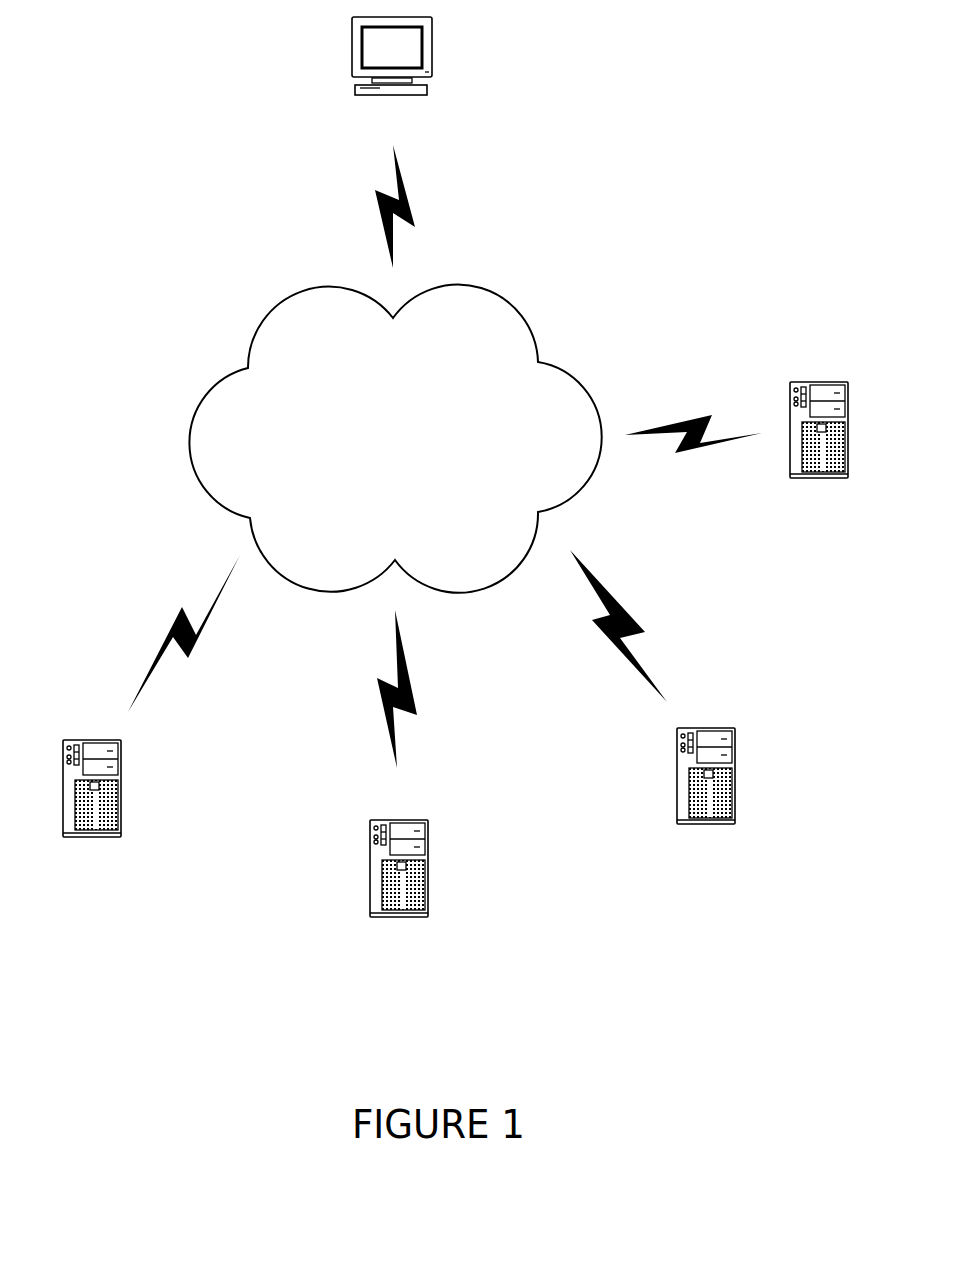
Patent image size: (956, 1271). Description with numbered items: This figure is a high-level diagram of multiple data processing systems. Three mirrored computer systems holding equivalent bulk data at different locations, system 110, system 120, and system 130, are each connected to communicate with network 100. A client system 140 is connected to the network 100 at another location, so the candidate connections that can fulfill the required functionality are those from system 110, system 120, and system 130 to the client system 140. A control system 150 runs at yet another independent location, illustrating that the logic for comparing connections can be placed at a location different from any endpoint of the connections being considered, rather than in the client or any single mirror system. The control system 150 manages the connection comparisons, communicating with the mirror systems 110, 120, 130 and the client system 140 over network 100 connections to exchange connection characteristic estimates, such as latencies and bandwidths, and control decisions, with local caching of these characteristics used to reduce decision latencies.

The network 100 is at (395, 439).
The system 110 is at (92, 798).
The system 120 is at (399, 878).
The system 130 is at (706, 787).
The client system 140 is at (392, 68).
The control system 150 is at (819, 443).